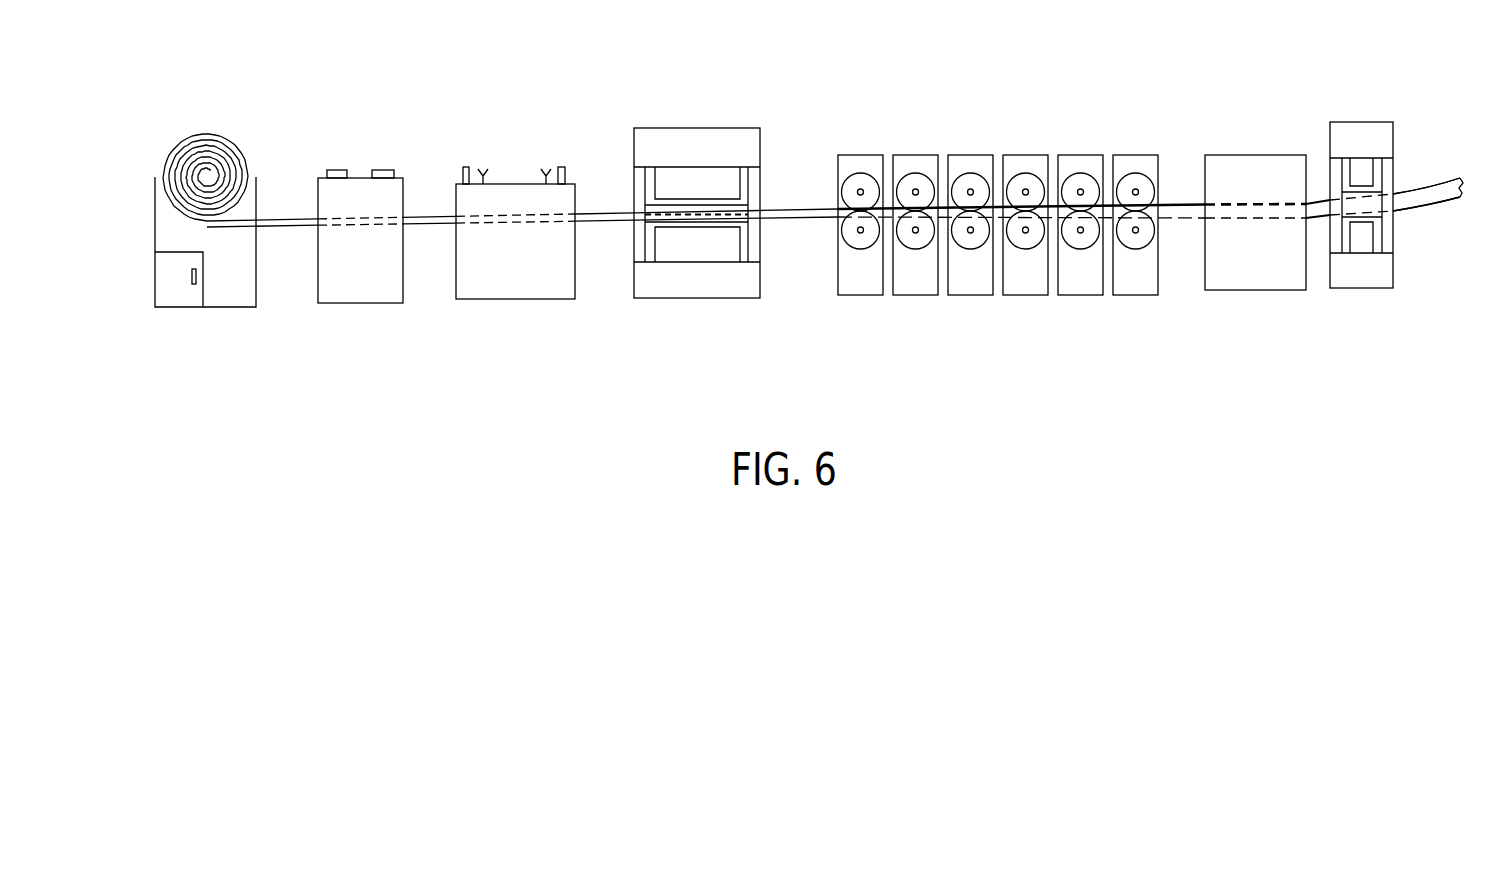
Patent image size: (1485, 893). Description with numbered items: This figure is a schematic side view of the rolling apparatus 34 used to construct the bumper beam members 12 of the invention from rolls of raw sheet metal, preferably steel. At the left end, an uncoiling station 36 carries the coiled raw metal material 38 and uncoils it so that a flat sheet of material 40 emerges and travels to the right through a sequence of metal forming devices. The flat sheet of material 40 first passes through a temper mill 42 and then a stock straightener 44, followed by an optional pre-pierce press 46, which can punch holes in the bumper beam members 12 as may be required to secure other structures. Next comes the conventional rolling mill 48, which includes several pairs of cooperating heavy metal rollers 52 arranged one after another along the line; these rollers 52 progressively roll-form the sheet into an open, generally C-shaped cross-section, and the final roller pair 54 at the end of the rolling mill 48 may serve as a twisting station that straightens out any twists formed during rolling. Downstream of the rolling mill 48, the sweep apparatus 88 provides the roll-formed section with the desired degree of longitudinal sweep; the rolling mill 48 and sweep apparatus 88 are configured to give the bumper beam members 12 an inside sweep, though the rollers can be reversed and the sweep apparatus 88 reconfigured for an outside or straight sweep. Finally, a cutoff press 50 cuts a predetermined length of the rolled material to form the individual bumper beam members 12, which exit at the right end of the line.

The bumper beam member 12 is at (1433, 221).
The rolling apparatus 34 is at (640, 370).
The uncoiling station 36 is at (230, 282).
The coiled raw metal material 38 is at (217, 137).
The flat sheet of material 40 is at (277, 215).
The temper mill 42 is at (366, 288).
The stock straightener 44 is at (525, 288).
The pre-pierce press 46 is at (708, 280).
The rolling mill 48 is at (952, 336).
The cutoff press 50 is at (1359, 282).
The rollers 52 is at (906, 166).
The final forming roll 54 is at (1133, 171).
The sweep apparatus 88 is at (1243, 279).